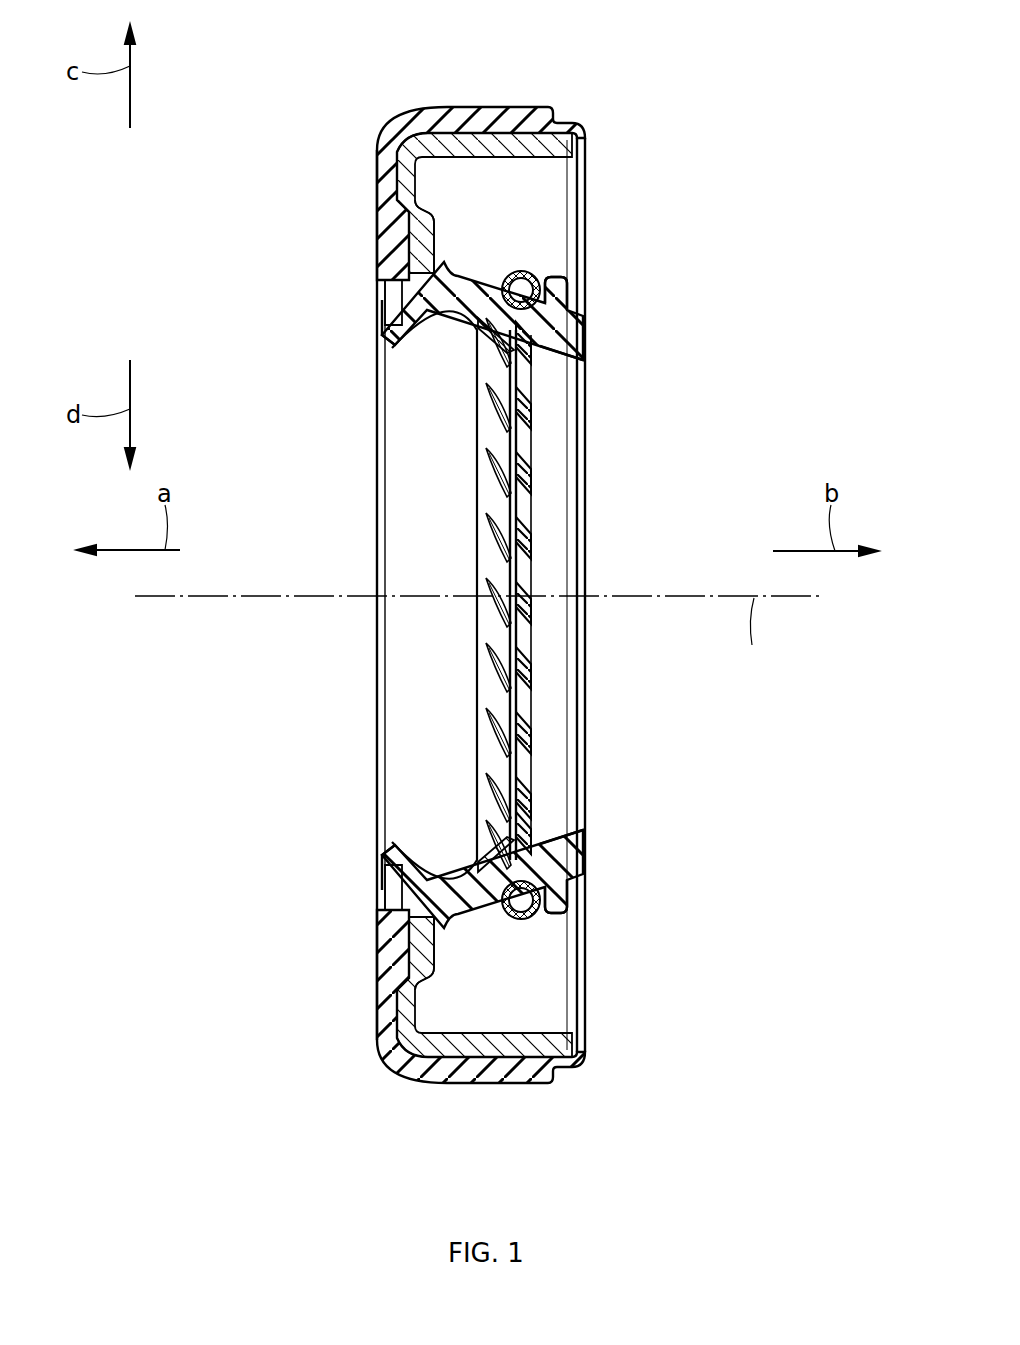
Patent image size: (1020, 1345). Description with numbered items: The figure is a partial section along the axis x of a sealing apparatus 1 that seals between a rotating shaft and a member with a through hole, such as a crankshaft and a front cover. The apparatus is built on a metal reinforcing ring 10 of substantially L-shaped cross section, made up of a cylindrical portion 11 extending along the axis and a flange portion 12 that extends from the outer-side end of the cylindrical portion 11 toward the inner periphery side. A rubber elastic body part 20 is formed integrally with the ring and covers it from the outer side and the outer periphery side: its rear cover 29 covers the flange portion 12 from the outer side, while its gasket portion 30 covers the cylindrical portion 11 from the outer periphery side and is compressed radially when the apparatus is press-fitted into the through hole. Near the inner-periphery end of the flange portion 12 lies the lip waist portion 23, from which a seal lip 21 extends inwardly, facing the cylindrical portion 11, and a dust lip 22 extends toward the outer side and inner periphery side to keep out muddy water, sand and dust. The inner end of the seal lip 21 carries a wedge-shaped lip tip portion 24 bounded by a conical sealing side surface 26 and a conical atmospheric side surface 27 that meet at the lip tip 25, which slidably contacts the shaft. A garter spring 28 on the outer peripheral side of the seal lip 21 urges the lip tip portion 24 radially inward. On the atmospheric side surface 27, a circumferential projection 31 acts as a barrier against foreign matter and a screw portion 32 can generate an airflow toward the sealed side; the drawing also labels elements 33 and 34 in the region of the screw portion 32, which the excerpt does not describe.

The sealing apparatus 1 is at (496, 1191).
The reinforcing ring 10 is at (675, 186).
The cylindrical portion 11 is at (505, 152).
The flange portion 12 is at (434, 234).
The elastic body part 20 is at (360, 100).
The seal lip 21 is at (472, 348).
The dust lip 22 is at (386, 346).
The lip waist portion 23 is at (404, 296).
The lip tip portion 24 is at (680, 373).
The lip tip 25 is at (556, 356).
The sealing side surface 26 is at (572, 330).
The atmospheric side surface 27 is at (502, 385).
The garter spring 28 is at (541, 282).
The rear cover 29 is at (380, 183).
The gasket portion 30 is at (499, 117).
The circumferential projection 31 is at (500, 573).
The screw portion 32 is at (680, 493).
The ribs 33 is at (527, 463).
The fins 34 is at (503, 418).